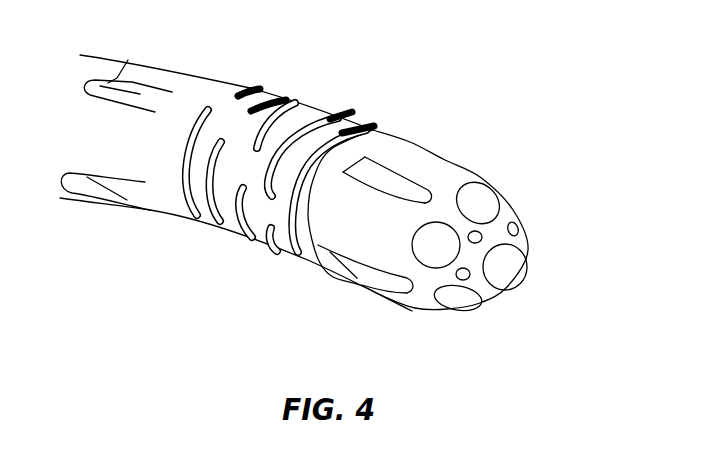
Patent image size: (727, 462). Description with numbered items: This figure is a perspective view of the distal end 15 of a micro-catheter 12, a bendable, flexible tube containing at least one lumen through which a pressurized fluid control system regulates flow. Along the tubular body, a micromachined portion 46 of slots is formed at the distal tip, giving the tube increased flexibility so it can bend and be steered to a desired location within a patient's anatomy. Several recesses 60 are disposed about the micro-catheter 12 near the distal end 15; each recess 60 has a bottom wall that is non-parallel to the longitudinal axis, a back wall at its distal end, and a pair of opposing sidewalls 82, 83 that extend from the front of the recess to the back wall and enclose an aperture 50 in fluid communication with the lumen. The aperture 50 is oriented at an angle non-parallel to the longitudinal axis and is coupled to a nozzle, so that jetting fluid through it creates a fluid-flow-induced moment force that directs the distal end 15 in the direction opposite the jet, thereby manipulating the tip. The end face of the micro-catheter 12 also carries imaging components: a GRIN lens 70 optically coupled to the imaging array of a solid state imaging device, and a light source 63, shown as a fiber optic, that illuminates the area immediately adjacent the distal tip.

The micro-catheter 12 is at (173, 212).
The distal end 15 is at (336, 204).
The micromachined portion 46 is at (306, 97).
The aperture 50 is at (400, 278).
The recess 60 is at (128, 60).
The light source 63 is at (519, 224).
The GRIN lens 70 is at (473, 207).
The sidewall 82 is at (427, 180).
The sidewall 83 is at (370, 182).